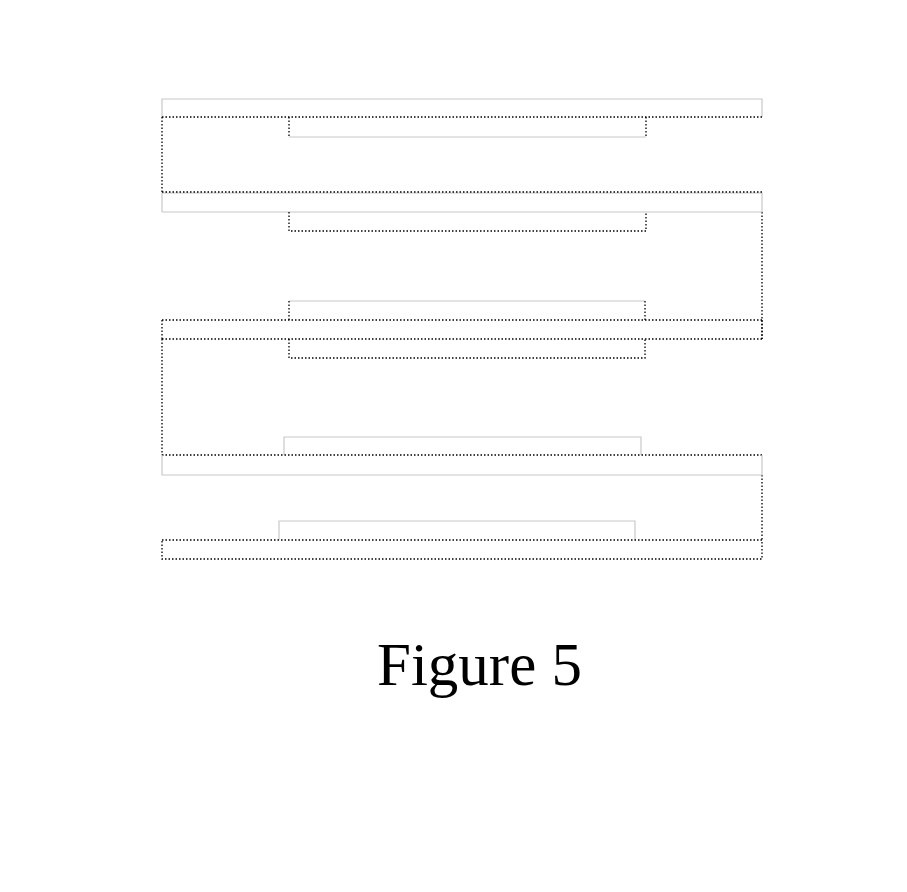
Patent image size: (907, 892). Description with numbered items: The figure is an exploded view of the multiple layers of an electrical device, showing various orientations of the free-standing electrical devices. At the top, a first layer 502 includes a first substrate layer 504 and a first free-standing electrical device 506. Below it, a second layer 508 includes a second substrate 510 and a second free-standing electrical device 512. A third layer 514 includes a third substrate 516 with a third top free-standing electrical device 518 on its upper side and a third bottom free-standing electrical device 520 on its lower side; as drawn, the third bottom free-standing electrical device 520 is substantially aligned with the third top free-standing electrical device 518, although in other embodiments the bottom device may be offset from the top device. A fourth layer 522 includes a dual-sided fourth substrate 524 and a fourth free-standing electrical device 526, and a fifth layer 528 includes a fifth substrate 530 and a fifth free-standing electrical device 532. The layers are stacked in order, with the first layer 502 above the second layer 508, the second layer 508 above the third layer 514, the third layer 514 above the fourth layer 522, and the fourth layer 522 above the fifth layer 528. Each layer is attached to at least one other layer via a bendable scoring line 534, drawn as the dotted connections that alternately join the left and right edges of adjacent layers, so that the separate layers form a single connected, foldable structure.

The first layer 502 is at (490, 120).
The first substrate layer 504 is at (162, 109).
The first free-standing electrical device 506 is at (289, 127).
The second layer 508 is at (490, 215).
The second substrate 510 is at (162, 204).
The second free-standing electrical device 512 is at (289, 222).
The third layer 514 is at (490, 334).
The third substrate 516 is at (162, 330).
The third top free-standing electrical device 518 is at (645, 310).
The third bottom free-standing electrical device 520 is at (289, 348).
The fourth layer 522 is at (490, 444).
The dual-sided fourth substrate 524 is at (162, 464).
The fourth free-standing electrical device 526 is at (641, 443).
The fifth layer 528 is at (490, 528).
The fifth substrate 530 is at (162, 546).
The fifth free-standing electrical device 532 is at (635, 528).
The bendable scoring line 534 is at (162, 166).